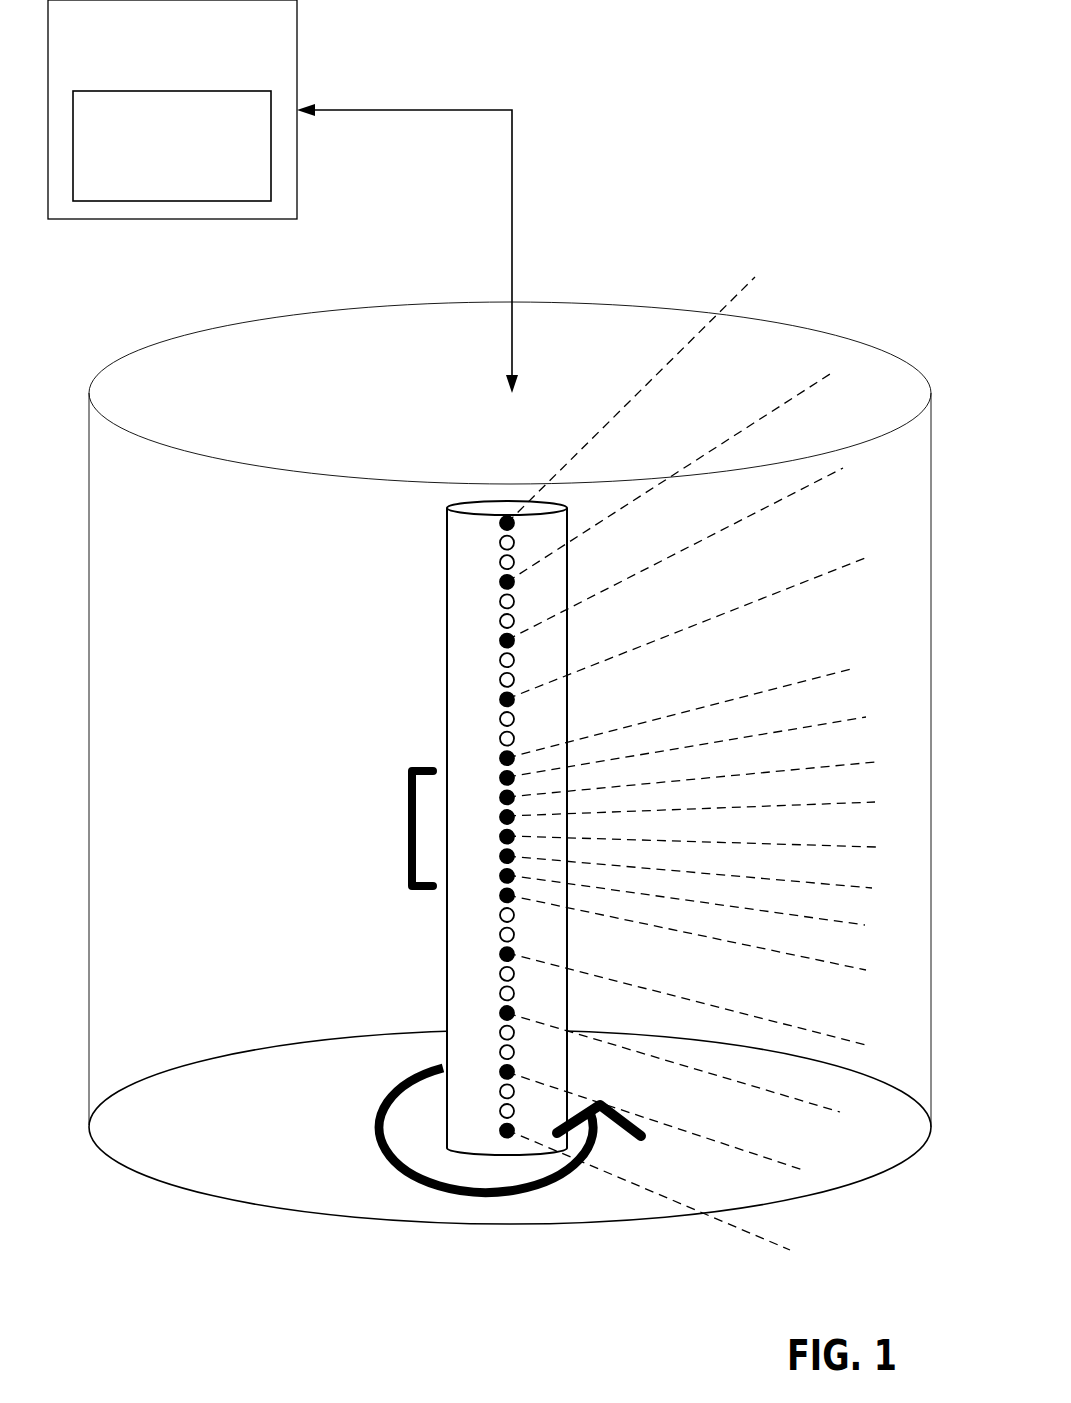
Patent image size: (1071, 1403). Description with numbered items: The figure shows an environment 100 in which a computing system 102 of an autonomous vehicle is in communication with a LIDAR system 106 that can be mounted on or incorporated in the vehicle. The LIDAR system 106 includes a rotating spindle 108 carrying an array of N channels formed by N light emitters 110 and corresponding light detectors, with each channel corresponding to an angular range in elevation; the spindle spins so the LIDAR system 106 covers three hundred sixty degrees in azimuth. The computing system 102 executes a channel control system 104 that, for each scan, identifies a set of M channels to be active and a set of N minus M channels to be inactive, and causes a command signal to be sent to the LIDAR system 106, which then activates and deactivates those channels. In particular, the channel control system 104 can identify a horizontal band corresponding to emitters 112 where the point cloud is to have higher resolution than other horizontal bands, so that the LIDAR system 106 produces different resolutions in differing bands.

The environment 100 is at (742, 42).
The computing system 102 is at (297, 40).
The channel control system 104 is at (172, 146).
The LIDAR system 106 is at (148, 348).
The rotating spindle 108 is at (447, 952).
The light emitters 110 is at (472, 557).
The emitters 112 is at (409, 818).